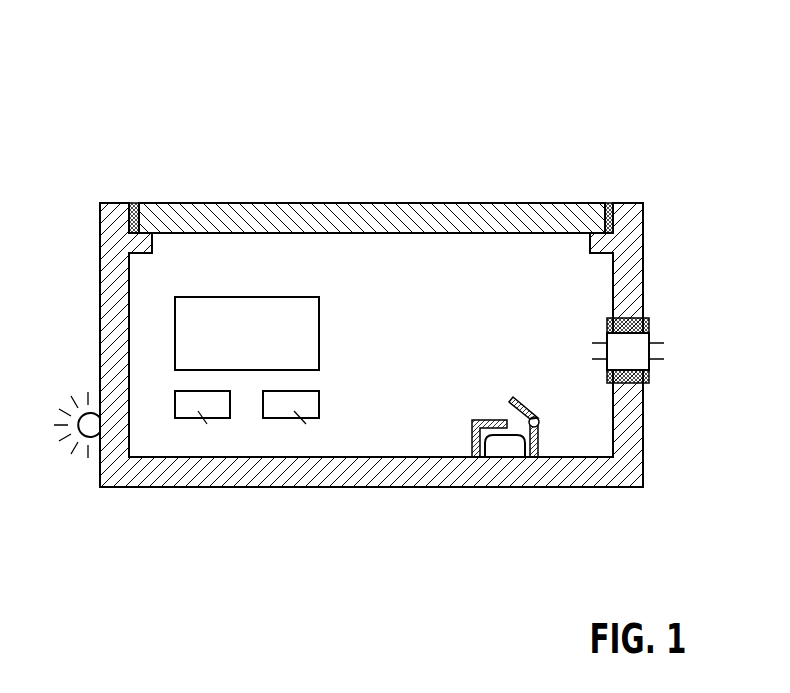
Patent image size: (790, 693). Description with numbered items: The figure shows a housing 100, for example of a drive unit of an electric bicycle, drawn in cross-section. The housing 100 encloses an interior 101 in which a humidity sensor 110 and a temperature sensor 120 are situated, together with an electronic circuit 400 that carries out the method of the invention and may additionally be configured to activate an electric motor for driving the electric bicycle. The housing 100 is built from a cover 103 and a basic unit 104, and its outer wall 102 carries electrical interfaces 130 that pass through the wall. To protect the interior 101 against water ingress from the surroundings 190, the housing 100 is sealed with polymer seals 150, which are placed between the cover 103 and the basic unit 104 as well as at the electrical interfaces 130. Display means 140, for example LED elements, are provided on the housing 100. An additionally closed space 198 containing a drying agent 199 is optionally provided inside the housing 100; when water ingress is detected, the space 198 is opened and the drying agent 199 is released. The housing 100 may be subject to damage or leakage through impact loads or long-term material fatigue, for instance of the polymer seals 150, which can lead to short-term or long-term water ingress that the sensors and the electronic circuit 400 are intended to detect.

The housing 100 is at (393, 158).
The interior 101 is at (514, 345).
The outer wall 102 is at (494, 215).
The cover 103 is at (310, 206).
The basic unit 104 is at (232, 475).
The humidity sensor 110 is at (190, 405).
The temperature sensor 120 is at (306, 405).
The electrical interfaces 130 is at (644, 351).
The display means 140 is at (92, 438).
The polymer seal 150 is at (133, 204).
The surroundings 190 is at (172, 35).
The closed space 198 is at (476, 440).
The drying agent 199 is at (500, 447).
The electronic circuit 400 is at (298, 331).